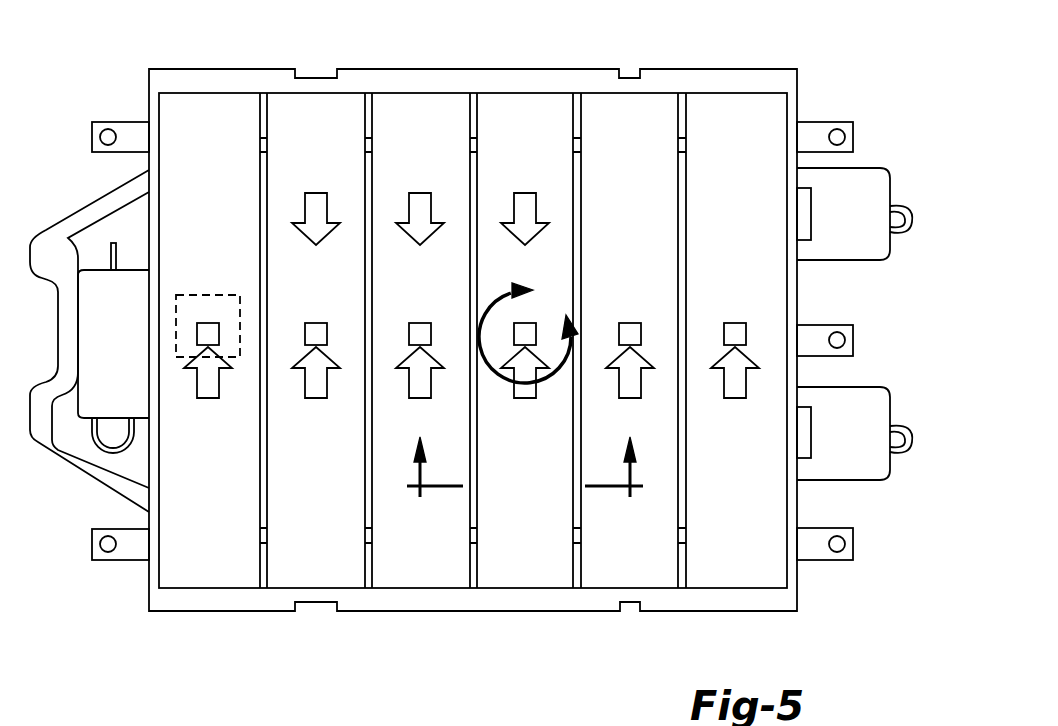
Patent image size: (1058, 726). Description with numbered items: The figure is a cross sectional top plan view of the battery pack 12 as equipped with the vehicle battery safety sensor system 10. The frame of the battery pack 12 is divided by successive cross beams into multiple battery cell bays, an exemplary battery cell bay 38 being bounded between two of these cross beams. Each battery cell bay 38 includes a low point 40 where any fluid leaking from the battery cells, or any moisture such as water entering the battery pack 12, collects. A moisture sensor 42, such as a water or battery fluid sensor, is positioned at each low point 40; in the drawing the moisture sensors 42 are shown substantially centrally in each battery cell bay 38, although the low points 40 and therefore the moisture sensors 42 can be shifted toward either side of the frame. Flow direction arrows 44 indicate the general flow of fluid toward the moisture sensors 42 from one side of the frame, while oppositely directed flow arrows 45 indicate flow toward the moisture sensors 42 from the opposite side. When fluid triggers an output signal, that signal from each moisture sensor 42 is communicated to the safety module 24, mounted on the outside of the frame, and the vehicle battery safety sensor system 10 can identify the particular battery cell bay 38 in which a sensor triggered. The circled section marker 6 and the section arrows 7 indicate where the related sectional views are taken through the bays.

The battery pack 12 is at (840, 62).
The safety module 24 is at (865, 407).
The battery cell bay 38 is at (308, 127).
The low point 40 is at (179, 295).
The moisture sensor 42 is at (211, 322).
The flow direction arrows 44 is at (210, 398).
The oppositely directed flow arrows 45 is at (327, 207).
The section view 6 indicator 6 is at (528, 333).
The section view 7 indicator 7 is at (525, 488).
The vehicle battery safety sensor system 10 is at (218, 723).